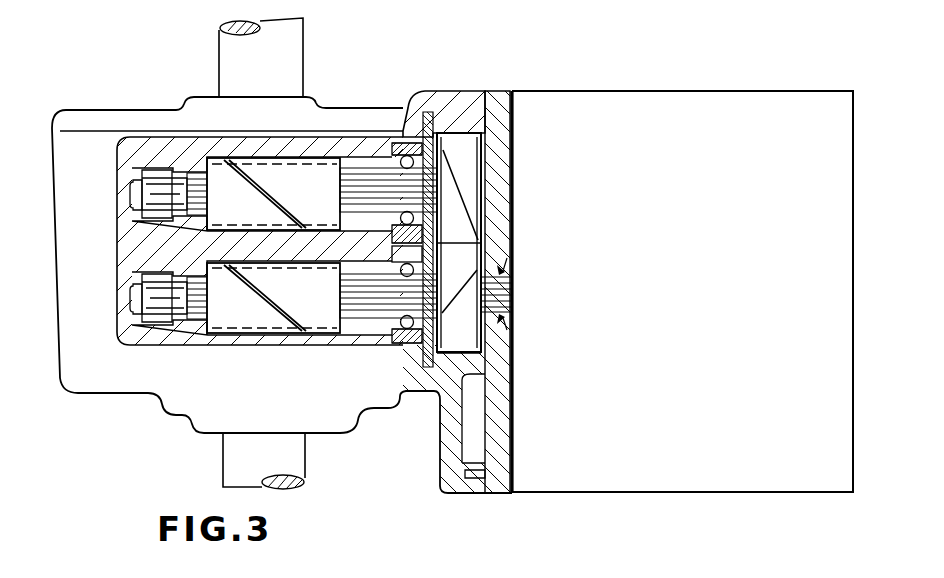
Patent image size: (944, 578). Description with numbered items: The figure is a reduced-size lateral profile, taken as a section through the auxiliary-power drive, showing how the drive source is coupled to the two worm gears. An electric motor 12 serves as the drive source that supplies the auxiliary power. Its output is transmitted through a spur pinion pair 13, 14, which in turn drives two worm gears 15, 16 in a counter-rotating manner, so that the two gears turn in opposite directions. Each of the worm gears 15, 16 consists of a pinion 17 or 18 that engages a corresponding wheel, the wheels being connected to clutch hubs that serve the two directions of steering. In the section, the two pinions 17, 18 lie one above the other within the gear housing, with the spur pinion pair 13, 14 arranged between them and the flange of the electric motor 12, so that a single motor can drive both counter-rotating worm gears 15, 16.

The electric motor 12 is at (655, 128).
The spur pinion 13 is at (482, 326).
The spur pinion 14 is at (467, 160).
The worm gear 15 is at (90, 403).
The worm gear 16 is at (120, 102).
The pinion 17 is at (222, 307).
The pinion 18 is at (317, 180).